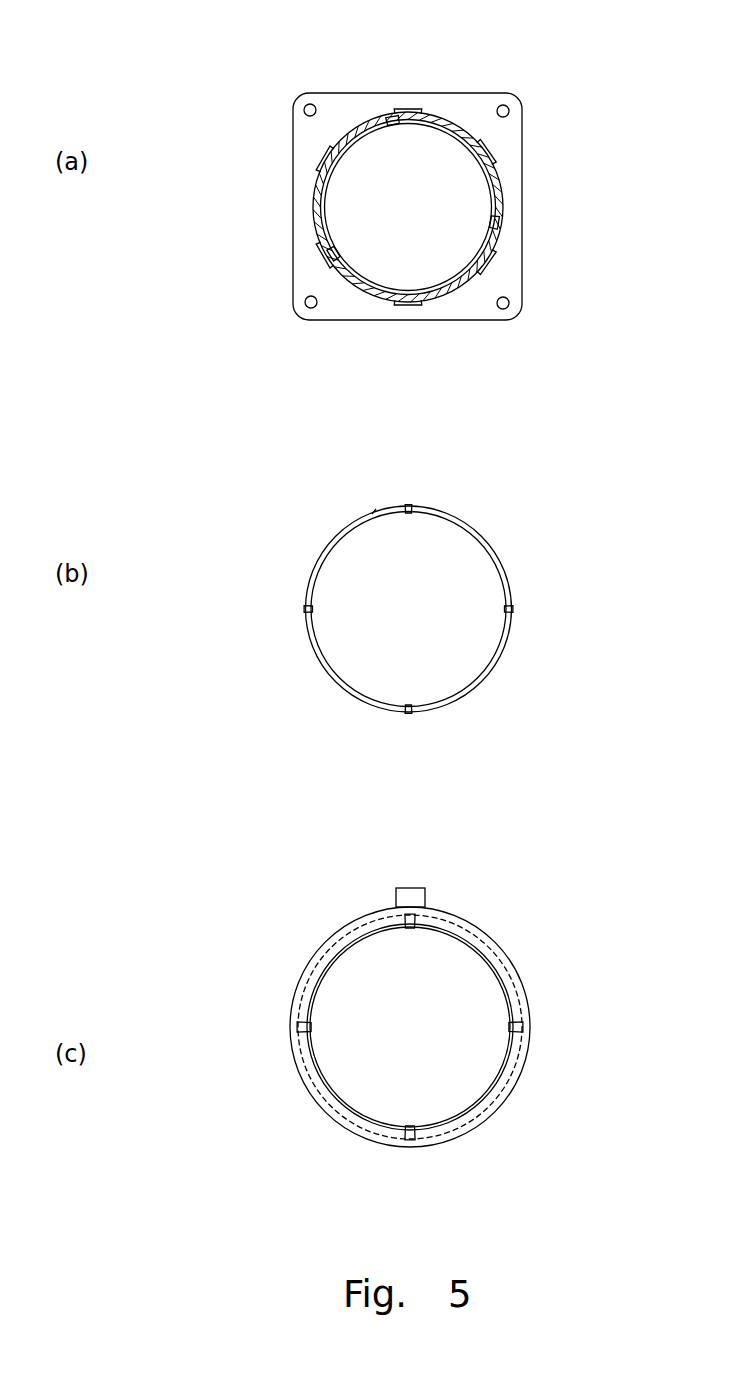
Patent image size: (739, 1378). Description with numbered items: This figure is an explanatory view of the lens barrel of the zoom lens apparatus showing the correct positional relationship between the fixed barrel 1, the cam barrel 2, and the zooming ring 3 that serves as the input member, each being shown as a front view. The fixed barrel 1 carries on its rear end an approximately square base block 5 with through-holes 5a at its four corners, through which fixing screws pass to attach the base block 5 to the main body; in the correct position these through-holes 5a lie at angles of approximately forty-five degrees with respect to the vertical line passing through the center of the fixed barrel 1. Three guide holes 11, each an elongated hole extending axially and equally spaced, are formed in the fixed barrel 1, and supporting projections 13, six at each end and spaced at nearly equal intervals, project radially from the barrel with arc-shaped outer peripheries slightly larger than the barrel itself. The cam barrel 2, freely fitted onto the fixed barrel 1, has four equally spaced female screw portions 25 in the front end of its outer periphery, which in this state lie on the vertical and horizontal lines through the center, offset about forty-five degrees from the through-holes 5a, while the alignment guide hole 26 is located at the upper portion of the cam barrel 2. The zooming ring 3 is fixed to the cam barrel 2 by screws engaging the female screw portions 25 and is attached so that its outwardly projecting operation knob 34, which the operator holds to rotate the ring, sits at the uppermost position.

The fixed barrel 1 is at (500, 180).
The cam barrel 2 is at (497, 540).
The zooming ring 3 is at (519, 982).
The base block 5 is at (456, 93).
The through-holes 5a is at (305, 106).
The guide holes 11 is at (392, 128).
The supporting projections 13 is at (398, 108).
The female screw portions 25 is at (410, 505).
The alignment guide hole 26 is at (374, 512).
The operation knob 34 is at (403, 899).